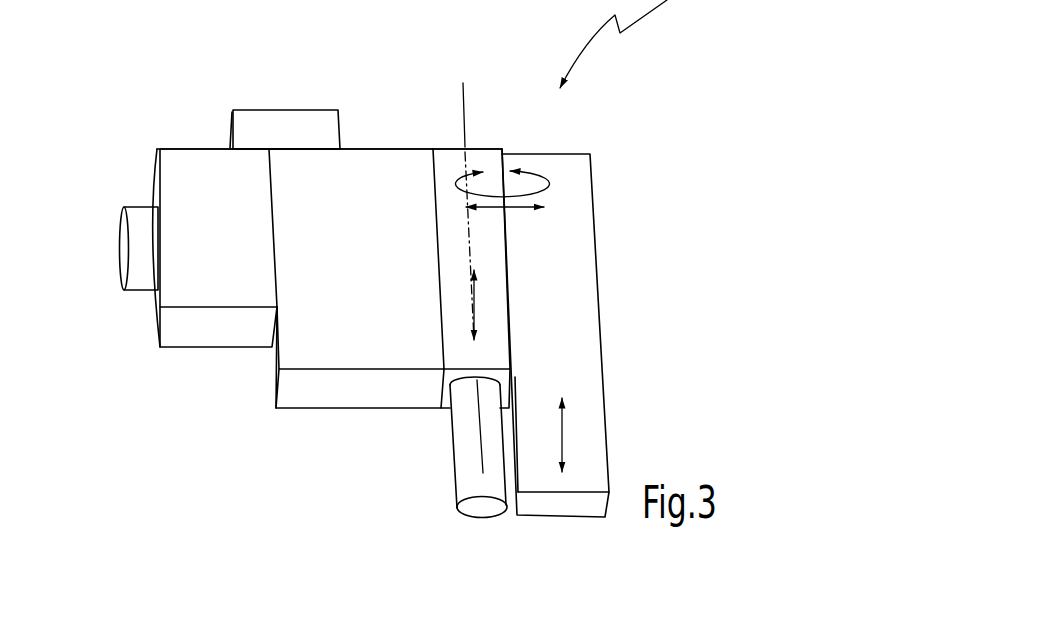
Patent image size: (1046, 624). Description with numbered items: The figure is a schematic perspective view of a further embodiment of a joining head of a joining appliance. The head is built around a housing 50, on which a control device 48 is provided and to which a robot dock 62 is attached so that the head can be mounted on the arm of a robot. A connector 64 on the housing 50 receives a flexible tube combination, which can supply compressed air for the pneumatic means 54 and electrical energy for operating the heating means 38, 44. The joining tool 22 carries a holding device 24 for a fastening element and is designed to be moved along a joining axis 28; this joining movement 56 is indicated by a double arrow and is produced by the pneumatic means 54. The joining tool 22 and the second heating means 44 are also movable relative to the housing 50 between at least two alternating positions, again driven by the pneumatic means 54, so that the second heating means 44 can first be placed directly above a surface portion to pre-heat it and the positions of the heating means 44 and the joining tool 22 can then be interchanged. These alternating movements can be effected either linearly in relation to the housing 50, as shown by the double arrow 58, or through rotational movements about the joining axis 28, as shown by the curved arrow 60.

The joining tool 22 is at (468, 247).
The holding device 24 is at (478, 485).
The joining axis 28 is at (461, 119).
The heating means 38 is at (492, 467).
The second heating means 44 is at (565, 325).
The control device 48 is at (210, 210).
The housing 50 is at (372, 149).
The pneumatic means 54 is at (323, 272).
The joining movement 56 is at (474, 305).
The linear alternating movement 58 is at (508, 207).
The rotational alternating movement 60 is at (512, 172).
The robot dock 62 is at (142, 247).
The connector 64 is at (293, 130).